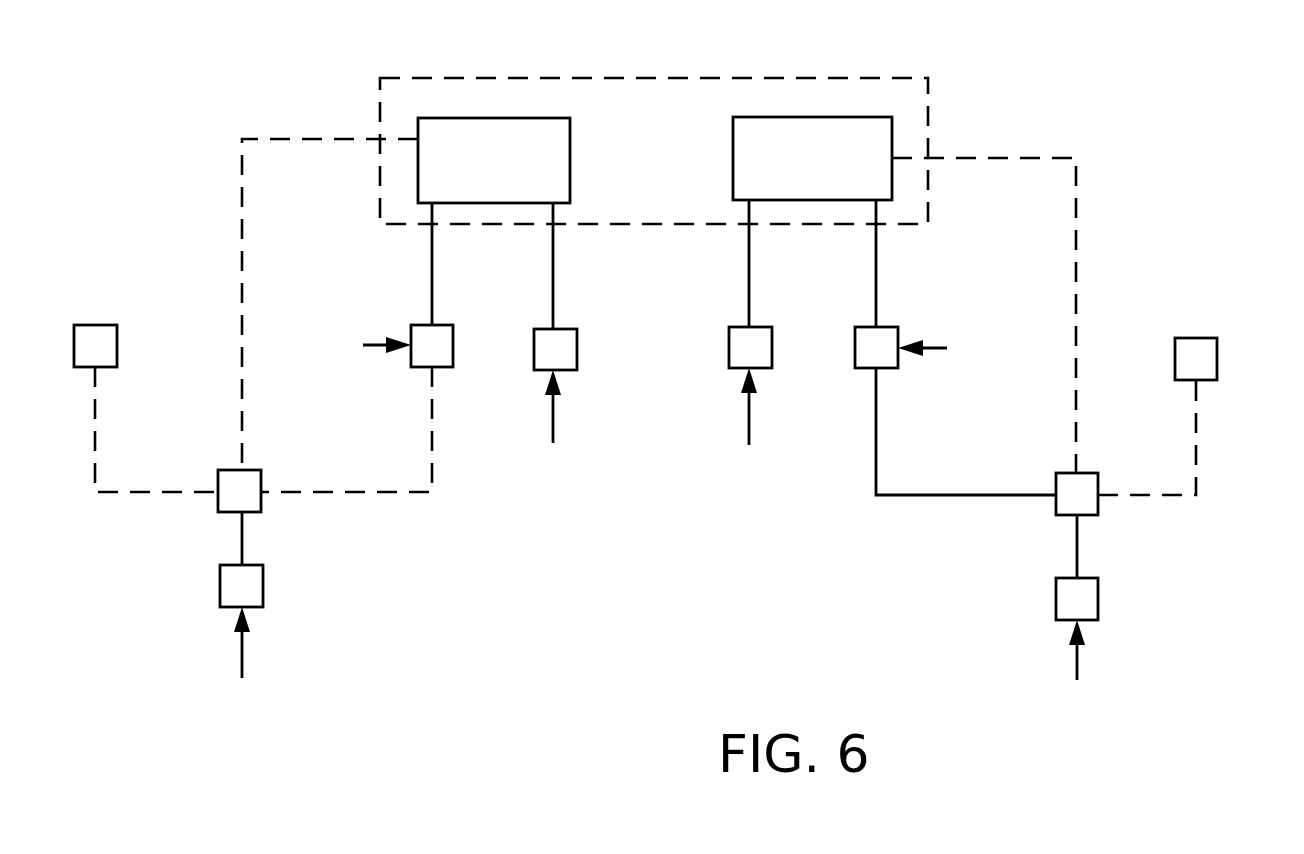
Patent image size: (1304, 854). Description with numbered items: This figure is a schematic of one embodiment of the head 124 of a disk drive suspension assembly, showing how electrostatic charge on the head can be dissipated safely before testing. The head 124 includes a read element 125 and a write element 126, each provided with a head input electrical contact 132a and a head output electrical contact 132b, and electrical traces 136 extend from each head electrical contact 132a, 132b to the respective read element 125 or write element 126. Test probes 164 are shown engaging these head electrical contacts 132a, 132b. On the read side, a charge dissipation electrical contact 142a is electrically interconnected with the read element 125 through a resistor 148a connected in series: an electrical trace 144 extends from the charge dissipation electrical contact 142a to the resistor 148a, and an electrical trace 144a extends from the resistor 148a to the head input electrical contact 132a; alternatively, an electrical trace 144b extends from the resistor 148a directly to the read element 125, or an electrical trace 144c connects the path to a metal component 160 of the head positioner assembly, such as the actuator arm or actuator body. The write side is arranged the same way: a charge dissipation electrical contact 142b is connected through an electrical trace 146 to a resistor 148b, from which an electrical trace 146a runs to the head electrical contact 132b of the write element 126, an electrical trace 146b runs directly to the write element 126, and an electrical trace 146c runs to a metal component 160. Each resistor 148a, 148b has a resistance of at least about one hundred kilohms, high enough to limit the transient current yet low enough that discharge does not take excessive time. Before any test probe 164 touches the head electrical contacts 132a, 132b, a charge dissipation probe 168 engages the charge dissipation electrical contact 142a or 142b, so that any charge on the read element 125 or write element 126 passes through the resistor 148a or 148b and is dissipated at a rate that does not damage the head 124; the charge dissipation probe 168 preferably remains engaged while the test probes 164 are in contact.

The head 124 is at (735, 78).
The read element 125 is at (836, 173).
The write element 126 is at (512, 171).
The electrical traces 136 is at (553, 262).
The head input electrical contact 132a is at (562, 329).
The head output electrical contact 132b is at (453, 330).
The test probe 164 is at (378, 346).
The metal component 160 is at (82, 325).
The electrical trace 146 is at (245, 535).
The electrical trace 146a is at (432, 478).
The electrical trace 146b is at (242, 238).
The electrical trace 146c is at (95, 405).
The resistor 148b is at (232, 470).
The charge dissipation electrical contact 142b is at (263, 595).
The charge dissipation probe 168 is at (243, 655).
The electrical trace 144 is at (1078, 555).
The electrical trace 144a is at (905, 498).
The electrical trace 144b is at (1077, 245).
The electrical trace 144c is at (1198, 455).
The resistor 148a is at (1056, 518).
The charge dissipation electrical contact 142a is at (1098, 595).